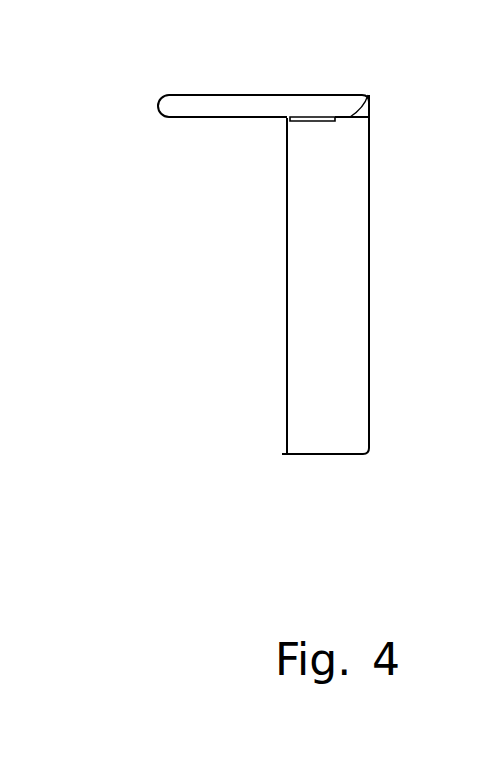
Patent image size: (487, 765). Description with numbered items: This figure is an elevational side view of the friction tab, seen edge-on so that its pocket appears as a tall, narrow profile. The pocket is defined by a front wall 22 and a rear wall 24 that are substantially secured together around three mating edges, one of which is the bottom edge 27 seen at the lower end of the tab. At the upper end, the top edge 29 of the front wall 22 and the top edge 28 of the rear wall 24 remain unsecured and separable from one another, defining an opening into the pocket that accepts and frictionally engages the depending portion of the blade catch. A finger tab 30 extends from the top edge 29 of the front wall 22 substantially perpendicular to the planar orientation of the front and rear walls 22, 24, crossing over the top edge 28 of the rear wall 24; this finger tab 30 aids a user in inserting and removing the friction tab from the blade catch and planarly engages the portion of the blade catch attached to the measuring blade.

The front wall 22 is at (370, 279).
The rear wall 24 is at (287, 296).
The bottom edge 27 is at (332, 455).
The top edge of rear wall 28 is at (284, 118).
The top edge of front wall 29 is at (368, 95).
The finger tab 30 is at (240, 102).